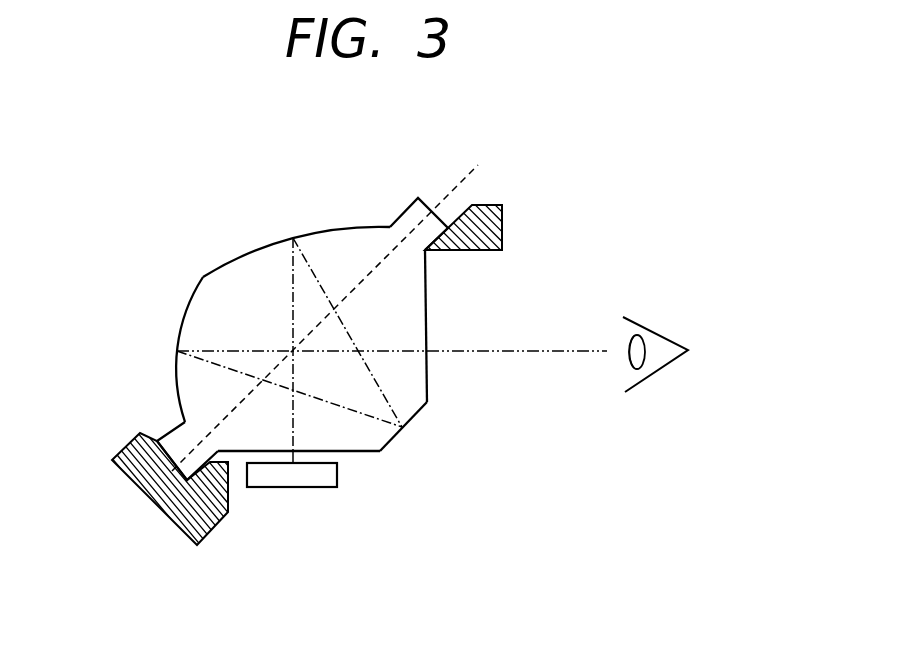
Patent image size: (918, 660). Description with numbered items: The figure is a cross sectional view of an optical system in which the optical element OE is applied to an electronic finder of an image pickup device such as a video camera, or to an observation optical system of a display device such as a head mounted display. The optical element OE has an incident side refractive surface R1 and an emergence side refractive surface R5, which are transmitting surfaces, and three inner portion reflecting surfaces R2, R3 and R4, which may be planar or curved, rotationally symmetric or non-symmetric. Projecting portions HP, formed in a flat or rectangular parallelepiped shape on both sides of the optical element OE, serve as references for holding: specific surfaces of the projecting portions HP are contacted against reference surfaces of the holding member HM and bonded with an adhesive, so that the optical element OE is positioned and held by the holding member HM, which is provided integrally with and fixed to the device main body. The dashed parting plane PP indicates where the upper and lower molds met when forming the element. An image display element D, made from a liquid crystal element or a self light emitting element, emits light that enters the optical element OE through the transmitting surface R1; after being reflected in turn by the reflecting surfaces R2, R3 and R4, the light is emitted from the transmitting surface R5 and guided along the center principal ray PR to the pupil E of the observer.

The optical element OE is at (371, 193).
The projecting portions HP is at (418, 198).
The parting plane PP is at (462, 180).
The optical axis / principal ray PR is at (507, 353).
The incident side refractive surface R1 is at (350, 452).
The reflecting surface R2 is at (261, 251).
The reflecting surface R3 is at (415, 418).
The reflecting surface R4 is at (186, 312).
The emergence side refractive surface R5 is at (427, 307).
The image display element D is at (300, 486).
The holding member HM is at (211, 530).
The pupil of an observer E is at (650, 370).